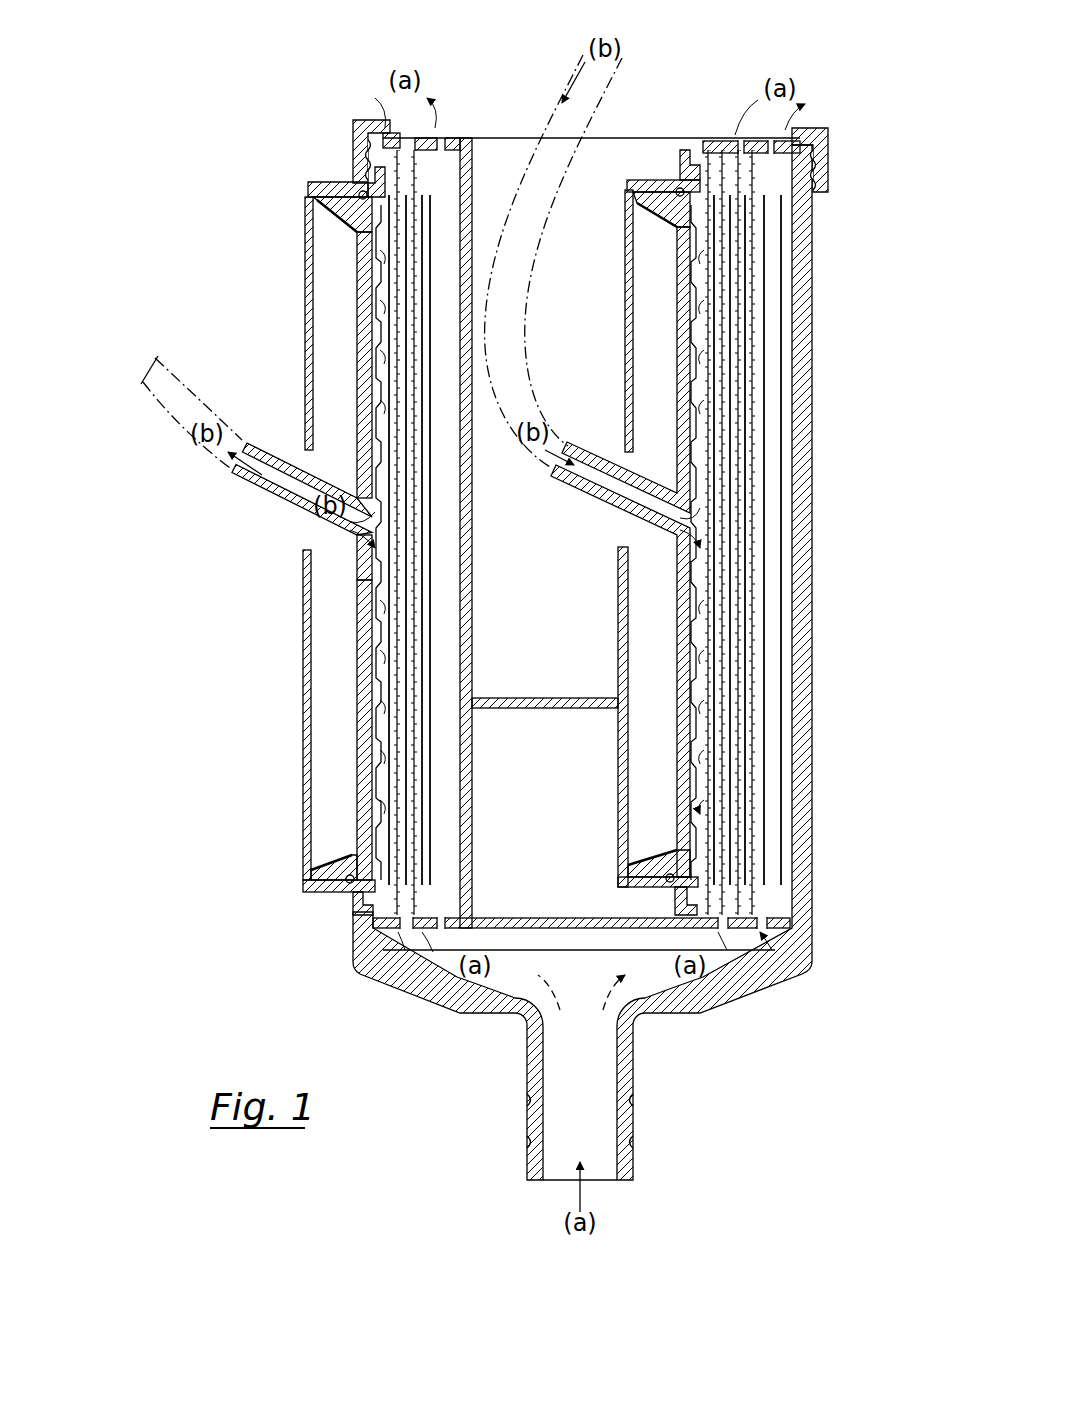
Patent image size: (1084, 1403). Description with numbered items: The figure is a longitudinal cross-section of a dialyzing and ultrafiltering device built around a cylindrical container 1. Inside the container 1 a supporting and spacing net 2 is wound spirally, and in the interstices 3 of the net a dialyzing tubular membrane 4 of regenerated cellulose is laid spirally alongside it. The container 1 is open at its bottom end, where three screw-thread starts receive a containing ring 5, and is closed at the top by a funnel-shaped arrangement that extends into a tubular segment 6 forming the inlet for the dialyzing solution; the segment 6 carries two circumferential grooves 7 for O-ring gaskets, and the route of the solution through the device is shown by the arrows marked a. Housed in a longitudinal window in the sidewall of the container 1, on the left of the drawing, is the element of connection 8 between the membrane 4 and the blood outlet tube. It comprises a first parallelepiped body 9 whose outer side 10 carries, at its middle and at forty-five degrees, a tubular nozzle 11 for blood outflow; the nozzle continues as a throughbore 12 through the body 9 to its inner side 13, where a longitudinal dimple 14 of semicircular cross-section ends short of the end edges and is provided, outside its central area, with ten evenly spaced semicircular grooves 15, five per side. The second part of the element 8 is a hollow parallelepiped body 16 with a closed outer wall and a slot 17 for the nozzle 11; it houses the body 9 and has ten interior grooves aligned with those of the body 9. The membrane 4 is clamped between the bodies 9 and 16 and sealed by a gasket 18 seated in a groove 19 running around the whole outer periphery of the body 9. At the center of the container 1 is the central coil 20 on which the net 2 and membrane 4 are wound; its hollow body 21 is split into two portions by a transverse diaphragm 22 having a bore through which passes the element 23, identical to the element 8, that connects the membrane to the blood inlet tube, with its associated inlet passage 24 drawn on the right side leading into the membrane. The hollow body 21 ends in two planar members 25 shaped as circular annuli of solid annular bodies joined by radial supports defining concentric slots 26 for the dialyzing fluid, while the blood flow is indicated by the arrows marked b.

The cylindrical container 1 is at (812, 862).
The net 2 is at (414, 772).
The interstices 3 is at (726, 143).
The dialyzing tubular membrane 4 is at (392, 782).
The containing ring 5 is at (355, 157).
The tubular segment 6 is at (548, 1120).
The circumferential grooves 7 is at (630, 1103).
The element of connection 8 is at (330, 372).
The first parallelepiped body 9 is at (343, 213).
The outer side 10 is at (357, 600).
The tubular nozzle 11 is at (262, 452).
The throughbore 12 is at (272, 480).
The inner side 13 is at (358, 578).
The longitudinal dimple 14 is at (340, 872).
The semicircular grooves 15 is at (378, 250).
The hollow parallelepiped body 16 is at (306, 318).
The slot 17 is at (305, 545).
The gasket 18 is at (688, 185).
The groove 19 is at (362, 200).
The central coil 20 is at (527, 867).
The hollow body 21 is at (620, 815).
The transverse diaphragm 22 is at (548, 708).
The element connecting the tubular membrane with the blood inlet tube 23 is at (628, 395).
The inlet pipe 24 is at (622, 552).
The planar members 25 is at (385, 133).
The concentric slots 26 is at (455, 140).